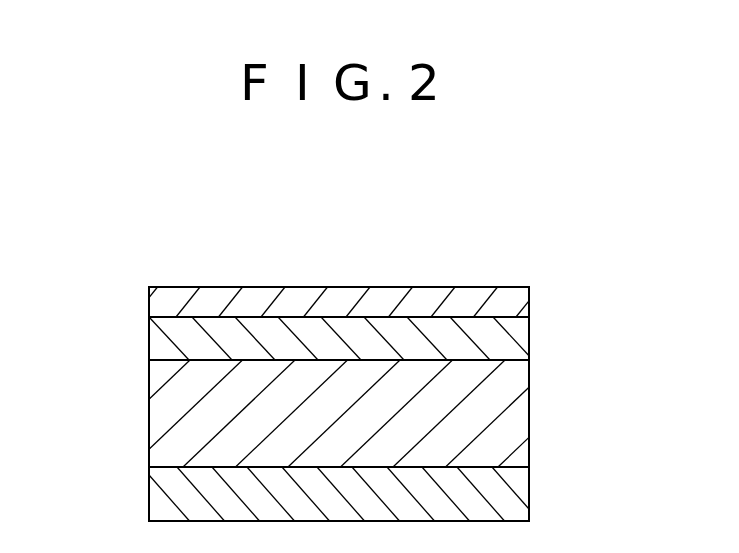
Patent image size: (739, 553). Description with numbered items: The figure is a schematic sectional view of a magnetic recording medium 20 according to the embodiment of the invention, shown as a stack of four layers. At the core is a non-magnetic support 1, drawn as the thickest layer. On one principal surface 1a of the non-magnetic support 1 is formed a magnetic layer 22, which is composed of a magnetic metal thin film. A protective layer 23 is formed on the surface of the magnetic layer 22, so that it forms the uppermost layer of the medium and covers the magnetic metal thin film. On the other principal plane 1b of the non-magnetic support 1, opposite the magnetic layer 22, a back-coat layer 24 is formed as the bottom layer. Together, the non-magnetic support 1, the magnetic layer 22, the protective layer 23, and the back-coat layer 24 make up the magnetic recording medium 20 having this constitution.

The magnetic recording medium 20 is at (442, 262).
The protective layer 23 is at (513, 308).
The magnetic layer 22 is at (513, 342).
The non-magnetic support 1 is at (517, 413).
The one principal surface 1a is at (150, 361).
The other principal plane 1b is at (150, 468).
The back-coat layer 24 is at (502, 490).